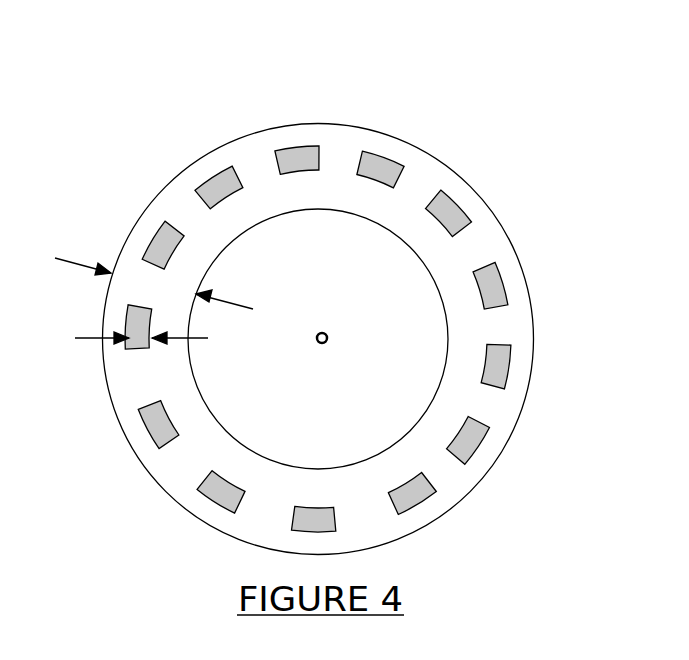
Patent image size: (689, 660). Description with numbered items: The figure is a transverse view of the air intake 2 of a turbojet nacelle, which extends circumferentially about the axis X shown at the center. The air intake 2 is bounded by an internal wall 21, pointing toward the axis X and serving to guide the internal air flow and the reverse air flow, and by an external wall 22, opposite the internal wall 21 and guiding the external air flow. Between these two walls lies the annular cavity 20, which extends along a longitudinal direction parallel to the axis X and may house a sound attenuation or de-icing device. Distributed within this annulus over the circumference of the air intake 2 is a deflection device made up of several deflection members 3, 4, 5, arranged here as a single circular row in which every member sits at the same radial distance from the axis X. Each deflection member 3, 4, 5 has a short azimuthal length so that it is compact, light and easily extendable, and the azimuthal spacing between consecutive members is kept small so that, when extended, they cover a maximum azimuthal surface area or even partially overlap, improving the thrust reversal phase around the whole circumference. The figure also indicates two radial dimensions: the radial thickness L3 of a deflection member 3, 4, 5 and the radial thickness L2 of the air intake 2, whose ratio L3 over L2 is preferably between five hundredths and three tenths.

The air intake 2 is at (294, 301).
The deflection member 3 is at (302, 146).
The deflection member 4 is at (222, 170).
The deflection member 5 is at (172, 228).
The annular cavity 20 is at (303, 289).
The internal wall 21 is at (446, 355).
The external wall 22 is at (435, 157).
The axis X is at (321, 355).
The radial thickness of the air intake L2 is at (237, 308).
The radial thickness of a deflection member L3 is at (153, 342).